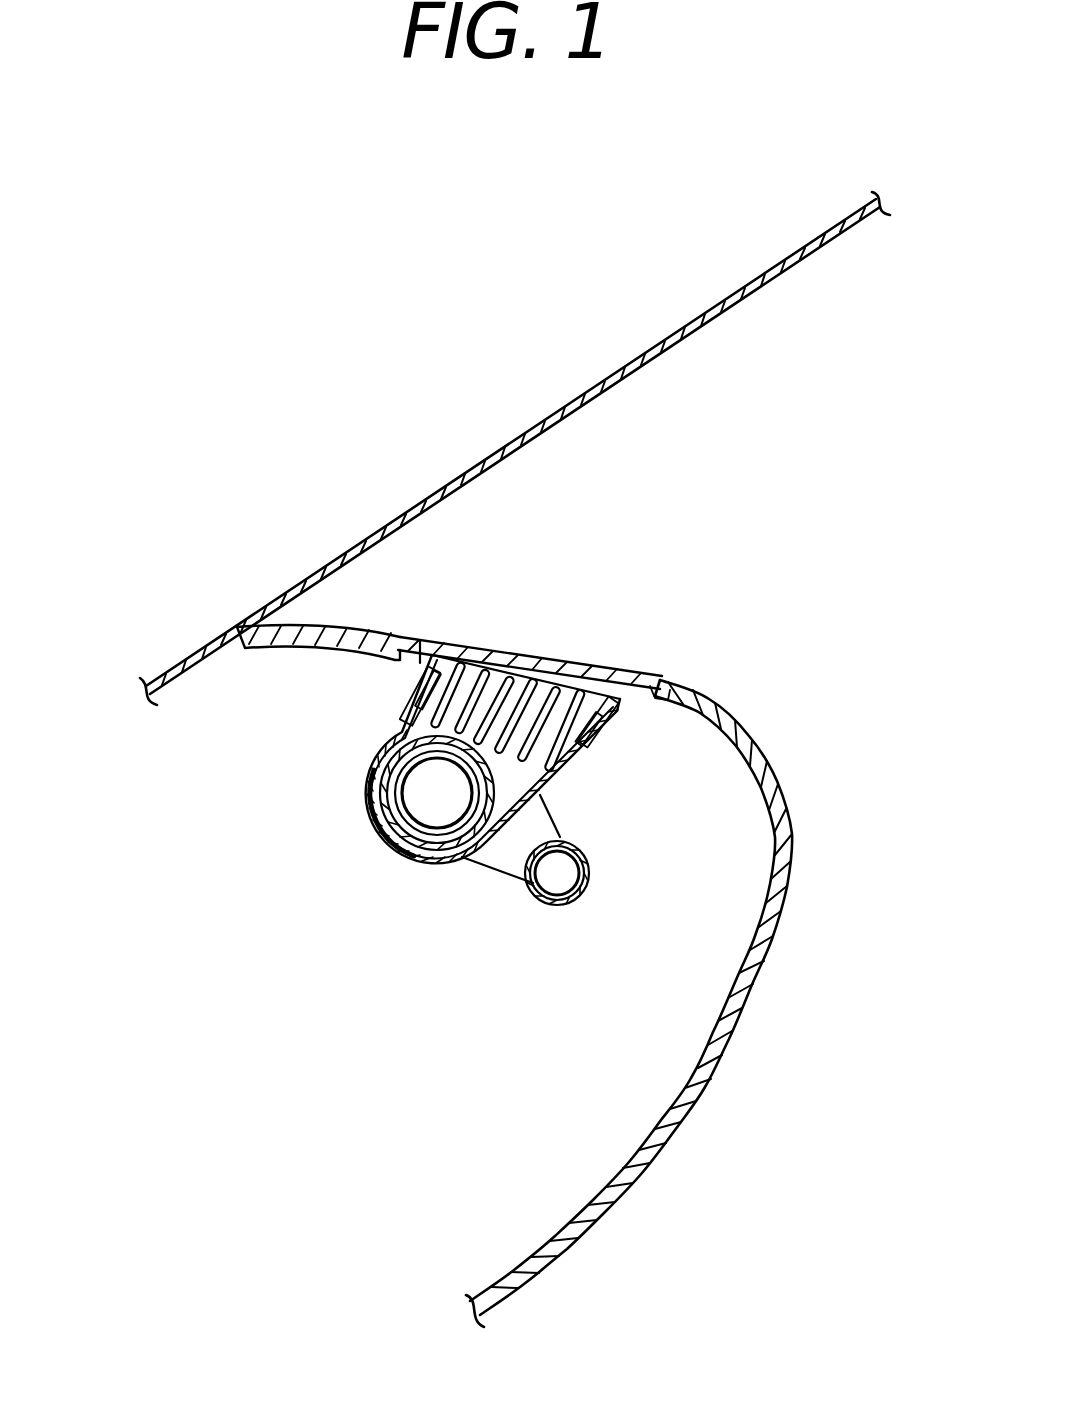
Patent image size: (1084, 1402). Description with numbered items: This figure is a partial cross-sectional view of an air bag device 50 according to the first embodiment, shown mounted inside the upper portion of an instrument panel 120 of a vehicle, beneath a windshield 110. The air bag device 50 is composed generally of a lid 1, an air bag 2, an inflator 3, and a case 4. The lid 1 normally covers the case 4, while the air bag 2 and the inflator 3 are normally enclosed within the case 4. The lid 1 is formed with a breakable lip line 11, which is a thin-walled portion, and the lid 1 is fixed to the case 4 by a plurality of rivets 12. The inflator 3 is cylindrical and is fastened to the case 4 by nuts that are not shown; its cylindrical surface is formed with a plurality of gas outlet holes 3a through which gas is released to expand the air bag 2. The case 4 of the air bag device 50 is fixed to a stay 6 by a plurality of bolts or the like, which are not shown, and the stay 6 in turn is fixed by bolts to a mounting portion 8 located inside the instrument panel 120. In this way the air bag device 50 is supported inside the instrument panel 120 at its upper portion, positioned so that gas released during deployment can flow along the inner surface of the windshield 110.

The lid 1 is at (591, 659).
The air bag 2 is at (487, 659).
The inflator 3 is at (427, 808).
The gas outlet holes 3a is at (402, 718).
The case 4 is at (382, 739).
The stay 6 is at (550, 821).
The mounting portion 8 is at (567, 903).
The breakable lip line 11 is at (530, 668).
The rivets 12 is at (613, 723).
The air bag device 50 is at (451, 770).
The windshield 110 is at (701, 316).
The instrument panel 120 is at (657, 1130).